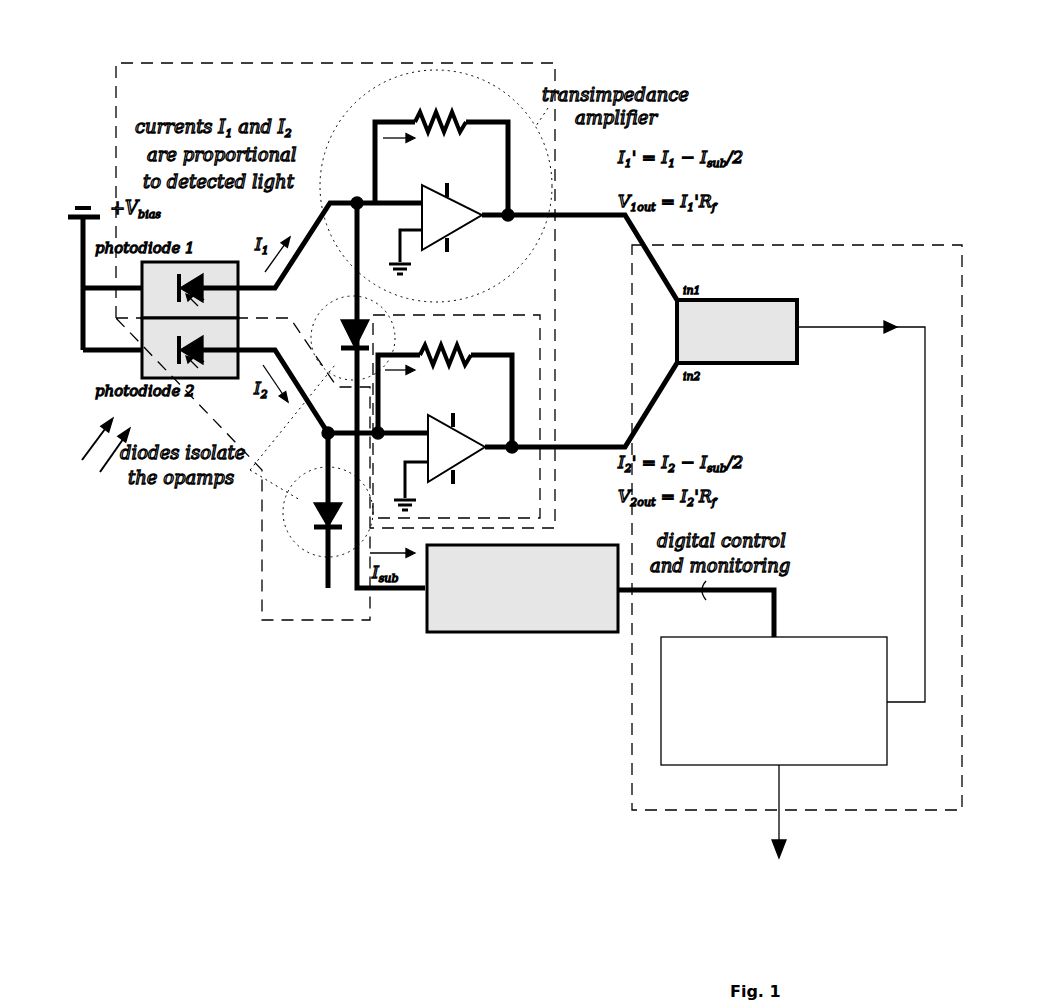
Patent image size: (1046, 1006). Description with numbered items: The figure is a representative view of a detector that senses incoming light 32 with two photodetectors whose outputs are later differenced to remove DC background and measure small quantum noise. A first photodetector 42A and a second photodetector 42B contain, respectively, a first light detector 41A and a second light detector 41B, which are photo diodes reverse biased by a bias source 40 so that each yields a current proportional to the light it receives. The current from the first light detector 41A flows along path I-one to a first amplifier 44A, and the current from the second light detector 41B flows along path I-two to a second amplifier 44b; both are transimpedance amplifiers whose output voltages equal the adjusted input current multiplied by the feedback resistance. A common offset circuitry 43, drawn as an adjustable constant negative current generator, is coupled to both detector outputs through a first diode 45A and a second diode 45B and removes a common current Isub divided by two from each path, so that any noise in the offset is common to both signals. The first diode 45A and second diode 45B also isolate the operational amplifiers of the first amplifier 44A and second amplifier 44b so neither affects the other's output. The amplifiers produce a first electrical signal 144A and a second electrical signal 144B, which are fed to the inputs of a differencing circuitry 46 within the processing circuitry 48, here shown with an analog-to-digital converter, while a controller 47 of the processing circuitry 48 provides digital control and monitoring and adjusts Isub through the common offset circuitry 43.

The incident light 32 is at (68, 468).
The bias source 40 is at (67, 215).
The first light detector 41A is at (207, 262).
The second light detector 41B is at (227, 382).
The first photodetector 42A is at (293, 60).
The second photodetector 42B is at (262, 567).
The common offset circuitry 43 is at (550, 636).
The first amplifier 44A is at (508, 90).
The second amplifier 44b is at (540, 343).
The first diode 45A is at (312, 338).
The second diode 45B is at (303, 543).
The differencing circuitry 46 is at (733, 363).
The controller 47 is at (844, 637).
The processing circuitry 48 is at (797, 810).
The first electrical signal 144A is at (662, 270).
The second electrical signal 144B is at (662, 393).